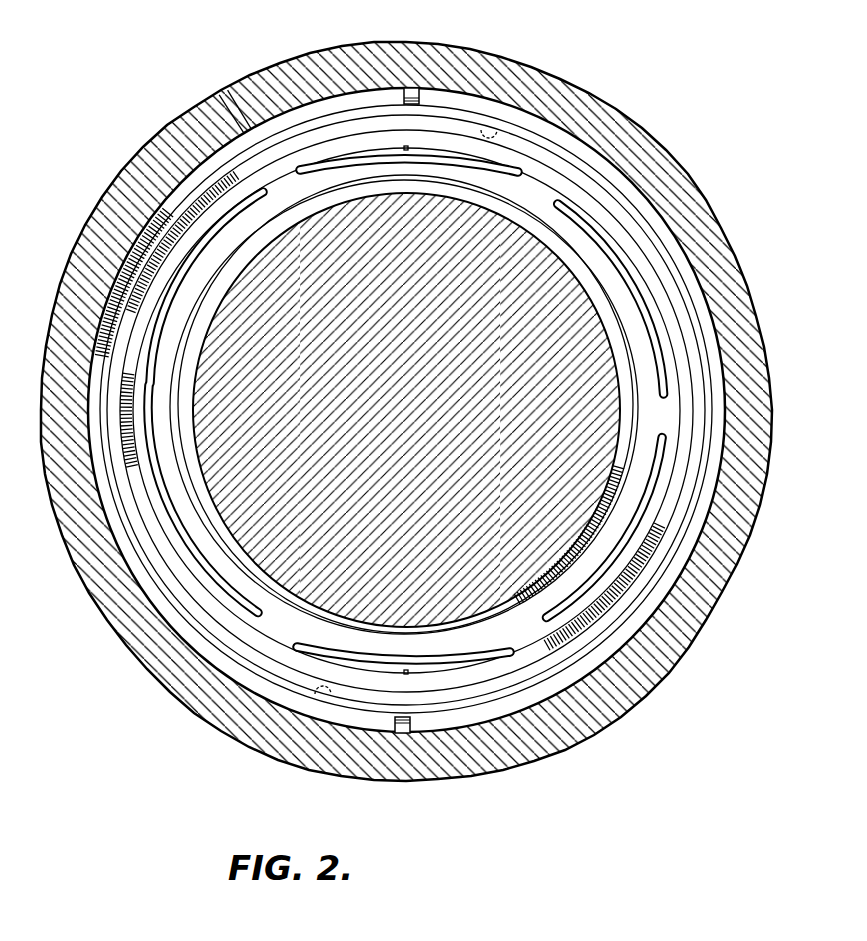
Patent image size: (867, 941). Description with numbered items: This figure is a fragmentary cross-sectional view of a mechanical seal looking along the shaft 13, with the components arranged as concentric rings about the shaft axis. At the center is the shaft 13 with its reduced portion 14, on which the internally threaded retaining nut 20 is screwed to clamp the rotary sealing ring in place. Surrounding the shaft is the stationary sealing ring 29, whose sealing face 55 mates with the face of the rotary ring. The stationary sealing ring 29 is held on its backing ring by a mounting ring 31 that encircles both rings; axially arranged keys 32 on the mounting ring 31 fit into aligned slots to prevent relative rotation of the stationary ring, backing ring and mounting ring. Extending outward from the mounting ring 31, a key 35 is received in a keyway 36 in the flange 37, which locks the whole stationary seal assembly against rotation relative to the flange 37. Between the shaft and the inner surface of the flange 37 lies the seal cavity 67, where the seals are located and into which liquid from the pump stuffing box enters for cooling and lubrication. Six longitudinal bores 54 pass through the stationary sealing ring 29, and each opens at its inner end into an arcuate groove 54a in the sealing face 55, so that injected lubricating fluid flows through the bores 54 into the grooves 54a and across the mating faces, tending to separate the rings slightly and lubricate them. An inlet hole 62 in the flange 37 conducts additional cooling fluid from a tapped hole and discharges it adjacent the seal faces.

The shaft 13 is at (305, 597).
The reduced portion of the shaft 14 is at (560, 573).
The retaining nut 20 is at (193, 463).
The stationary sealing ring 29 is at (633, 455).
The mounting ring 31 is at (183, 592).
The key 32 is at (490, 133).
The key 35 is at (417, 100).
The keyway 36 is at (407, 87).
The flange 37 is at (633, 130).
The longitudinal bores 54 is at (185, 275).
The arcuate grooves 54a is at (237, 216).
The sealing face 55 is at (535, 650).
The inlet hole 62 is at (240, 90).
The seal cavity 67 is at (698, 518).